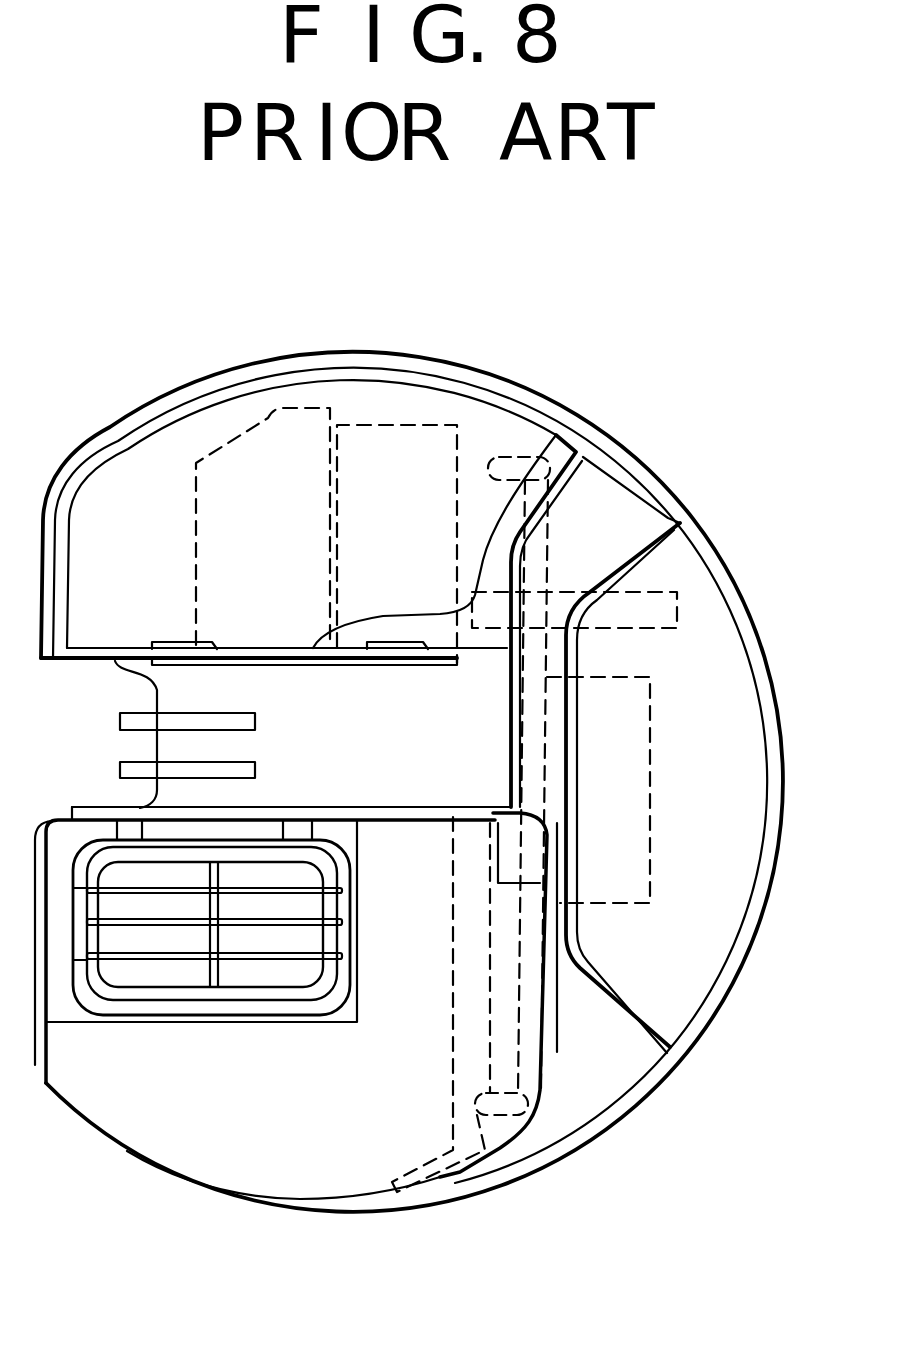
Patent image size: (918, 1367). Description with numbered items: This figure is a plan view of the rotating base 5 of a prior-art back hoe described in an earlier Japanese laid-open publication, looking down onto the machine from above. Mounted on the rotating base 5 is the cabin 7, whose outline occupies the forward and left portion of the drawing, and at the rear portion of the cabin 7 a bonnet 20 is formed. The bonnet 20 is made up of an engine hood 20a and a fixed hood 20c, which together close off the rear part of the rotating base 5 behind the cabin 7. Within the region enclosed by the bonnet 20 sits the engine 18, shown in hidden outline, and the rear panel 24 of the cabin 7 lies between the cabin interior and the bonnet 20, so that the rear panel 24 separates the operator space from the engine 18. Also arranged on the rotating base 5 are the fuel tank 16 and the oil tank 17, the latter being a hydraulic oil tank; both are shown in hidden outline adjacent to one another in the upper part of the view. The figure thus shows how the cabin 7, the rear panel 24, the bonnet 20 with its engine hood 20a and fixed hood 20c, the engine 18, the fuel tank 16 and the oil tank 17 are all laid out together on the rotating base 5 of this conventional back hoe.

The rotating base 5 is at (170, 387).
The cabin 7 is at (360, 1206).
The fuel tank 16 is at (266, 418).
The oil tank 17 is at (392, 423).
The engine 18 is at (652, 850).
The bonnet 20 is at (664, 474).
The engine hood 20a is at (660, 1002).
The fixed hood 20c is at (605, 488).
The rear panel 24 is at (541, 1078).